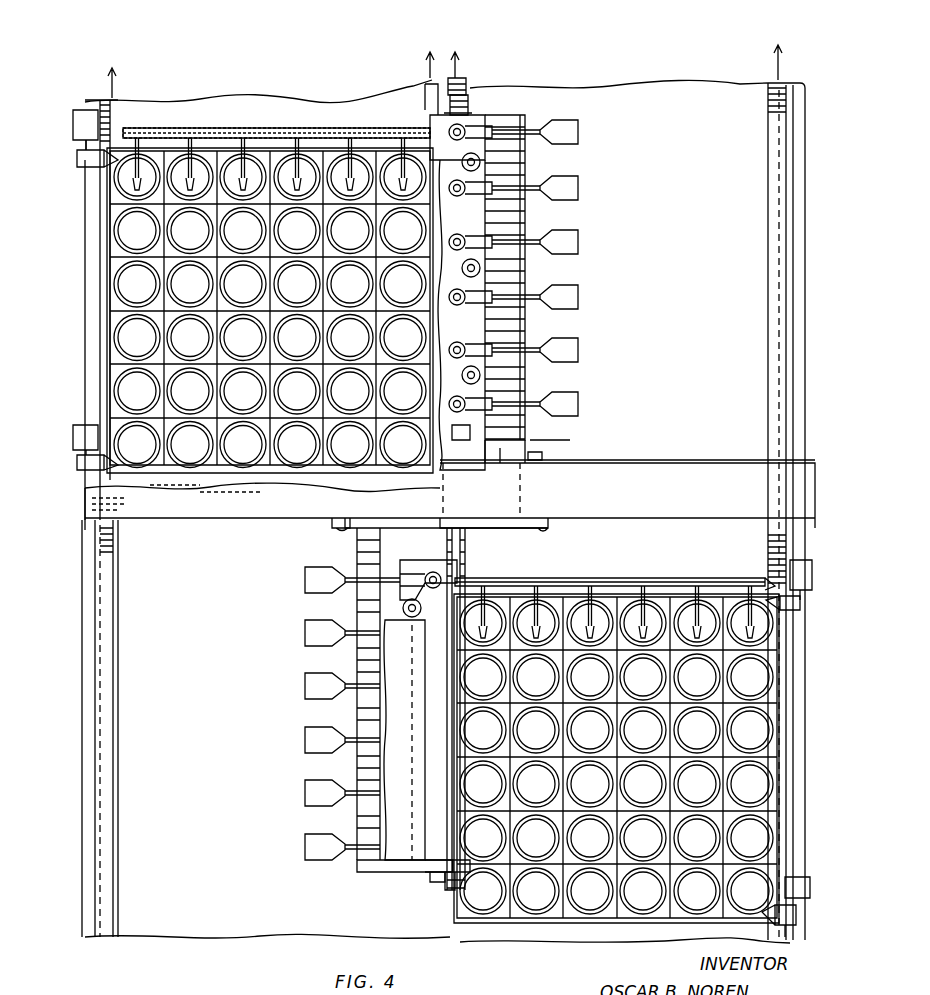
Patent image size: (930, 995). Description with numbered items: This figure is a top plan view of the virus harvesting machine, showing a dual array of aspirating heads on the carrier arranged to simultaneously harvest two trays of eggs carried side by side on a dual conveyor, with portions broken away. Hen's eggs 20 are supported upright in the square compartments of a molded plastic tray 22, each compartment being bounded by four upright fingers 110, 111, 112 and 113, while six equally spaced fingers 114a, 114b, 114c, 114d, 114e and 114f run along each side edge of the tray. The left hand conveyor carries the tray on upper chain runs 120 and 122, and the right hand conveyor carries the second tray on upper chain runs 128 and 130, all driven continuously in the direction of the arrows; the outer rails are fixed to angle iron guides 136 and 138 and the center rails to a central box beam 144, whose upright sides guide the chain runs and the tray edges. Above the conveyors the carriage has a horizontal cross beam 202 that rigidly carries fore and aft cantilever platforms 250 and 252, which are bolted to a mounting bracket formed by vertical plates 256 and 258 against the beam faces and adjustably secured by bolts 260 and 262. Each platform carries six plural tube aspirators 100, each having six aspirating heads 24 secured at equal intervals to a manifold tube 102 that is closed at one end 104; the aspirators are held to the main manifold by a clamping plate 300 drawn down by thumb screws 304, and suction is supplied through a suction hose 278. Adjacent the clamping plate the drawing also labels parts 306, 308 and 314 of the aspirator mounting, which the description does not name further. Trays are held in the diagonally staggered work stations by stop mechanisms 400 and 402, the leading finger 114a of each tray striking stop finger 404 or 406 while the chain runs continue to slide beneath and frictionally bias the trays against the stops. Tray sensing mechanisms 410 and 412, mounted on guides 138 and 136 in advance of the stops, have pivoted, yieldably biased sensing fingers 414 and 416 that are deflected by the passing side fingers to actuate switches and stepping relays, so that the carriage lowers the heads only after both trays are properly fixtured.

The hen's eggs 20 is at (272, 468).
The egg tray 22 is at (228, 486).
The aspirating head 24 is at (247, 170).
The plural tube aspirator 100 is at (266, 122).
The manifold tube 102 is at (336, 126).
The closed end of manifold tube 104 is at (766, 578).
The finger 110 is at (536, 784).
The finger 111 is at (483, 838).
The finger 112 is at (536, 891).
The finger 113 is at (590, 838).
The side edge finger 114a is at (110, 180).
The side edge finger 114b is at (108, 230).
The side edge finger 114c is at (108, 284).
The side edge finger 114d is at (108, 337).
The side edge finger 114e is at (108, 391).
The side edge finger 114f is at (117, 451).
The upper chain run 120 is at (112, 102).
The upper chain run 122 is at (430, 84).
The upper chain run 128 is at (462, 82).
The upper chain run 130 is at (772, 90).
The angle iron guide 136 is at (78, 632).
The angle iron guide 138 is at (796, 86).
The central box beam 144 is at (430, 50).
The cross beam 202 is at (152, 522).
The cantilever platform 250 is at (368, 872).
The cantilever platform 252 is at (520, 118).
The vertical plate 256 is at (550, 528).
The vertical plate 258 is at (552, 464).
The bolt 260 is at (340, 530).
The bolt 262 is at (540, 458).
The suction hose 278 is at (475, 100).
The clamping plate 300 is at (436, 118).
The thumb screw 304 is at (492, 184).
The spout head 306 is at (600, 140).
The spout arm 308 is at (558, 146).
The spout tip 314 is at (580, 140).
The stop mechanism 400 is at (810, 568).
The stop mechanism 402 is at (75, 102).
The stop finger 404 is at (798, 608).
The stop finger 406 is at (77, 160).
The tray sensing mechanism 410 is at (812, 878).
The tray sensing mechanism 412 is at (72, 434).
The sensing finger 414 is at (790, 910).
The sensing finger 416 is at (77, 462).